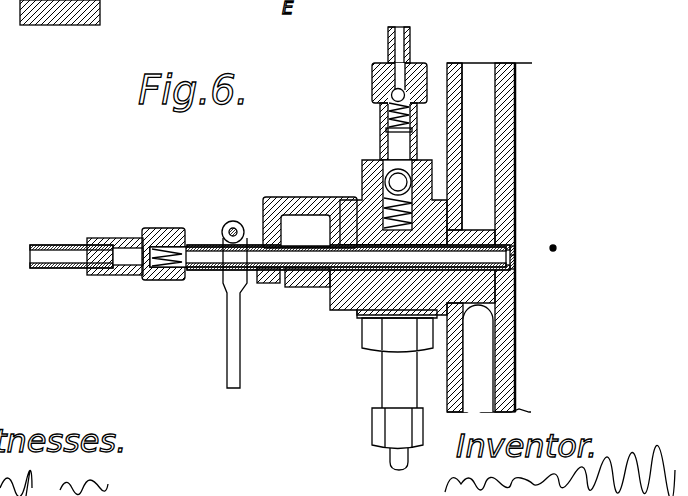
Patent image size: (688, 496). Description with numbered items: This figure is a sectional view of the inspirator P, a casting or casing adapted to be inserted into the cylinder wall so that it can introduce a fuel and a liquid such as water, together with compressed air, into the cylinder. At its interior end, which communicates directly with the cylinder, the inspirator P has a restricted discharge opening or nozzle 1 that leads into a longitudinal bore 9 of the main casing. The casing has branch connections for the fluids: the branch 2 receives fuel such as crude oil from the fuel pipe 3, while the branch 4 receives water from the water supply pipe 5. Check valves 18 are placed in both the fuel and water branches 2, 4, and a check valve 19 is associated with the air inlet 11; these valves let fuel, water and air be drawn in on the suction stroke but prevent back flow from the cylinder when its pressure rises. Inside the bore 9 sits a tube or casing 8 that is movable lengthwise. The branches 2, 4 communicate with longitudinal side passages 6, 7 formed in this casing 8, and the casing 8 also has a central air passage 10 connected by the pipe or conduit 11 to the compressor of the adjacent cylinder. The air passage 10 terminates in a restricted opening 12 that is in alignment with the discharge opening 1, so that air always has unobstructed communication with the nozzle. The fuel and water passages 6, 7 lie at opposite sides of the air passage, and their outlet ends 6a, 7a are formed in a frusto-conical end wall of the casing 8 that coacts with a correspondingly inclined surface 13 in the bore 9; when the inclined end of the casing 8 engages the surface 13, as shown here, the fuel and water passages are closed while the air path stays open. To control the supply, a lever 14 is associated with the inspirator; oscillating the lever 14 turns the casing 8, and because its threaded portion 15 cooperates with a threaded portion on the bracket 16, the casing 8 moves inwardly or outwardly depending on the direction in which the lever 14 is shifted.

The discharge opening or nozzle 1 is at (515, 250).
The fuel branch 2 is at (430, 96).
The fuel pipe 3 is at (398, 47).
The water branch 4 is at (388, 385).
The water supply pipe 5 is at (390, 463).
The fuel side passage 6 is at (464, 226).
The fuel passage outlet end 6a is at (515, 198).
The water side passage 7 is at (515, 295).
The water passage outlet end 7a is at (515, 272).
The tube or casing 8 is at (333, 285).
The bore of the inspirator casing 9 is at (400, 276).
The air passage 10 is at (362, 206).
The air pipe or conduit 11 is at (203, 272).
The restricted opening of the air passage 12 is at (515, 232).
The inclined surface 13 is at (515, 262).
The lever 14 is at (225, 345).
The threaded portion 15 is at (256, 230).
The bracket 16 is at (285, 197).
The check valve 18 is at (388, 110).
The check valve 19 is at (152, 237).
The inspirator P is at (266, 308).